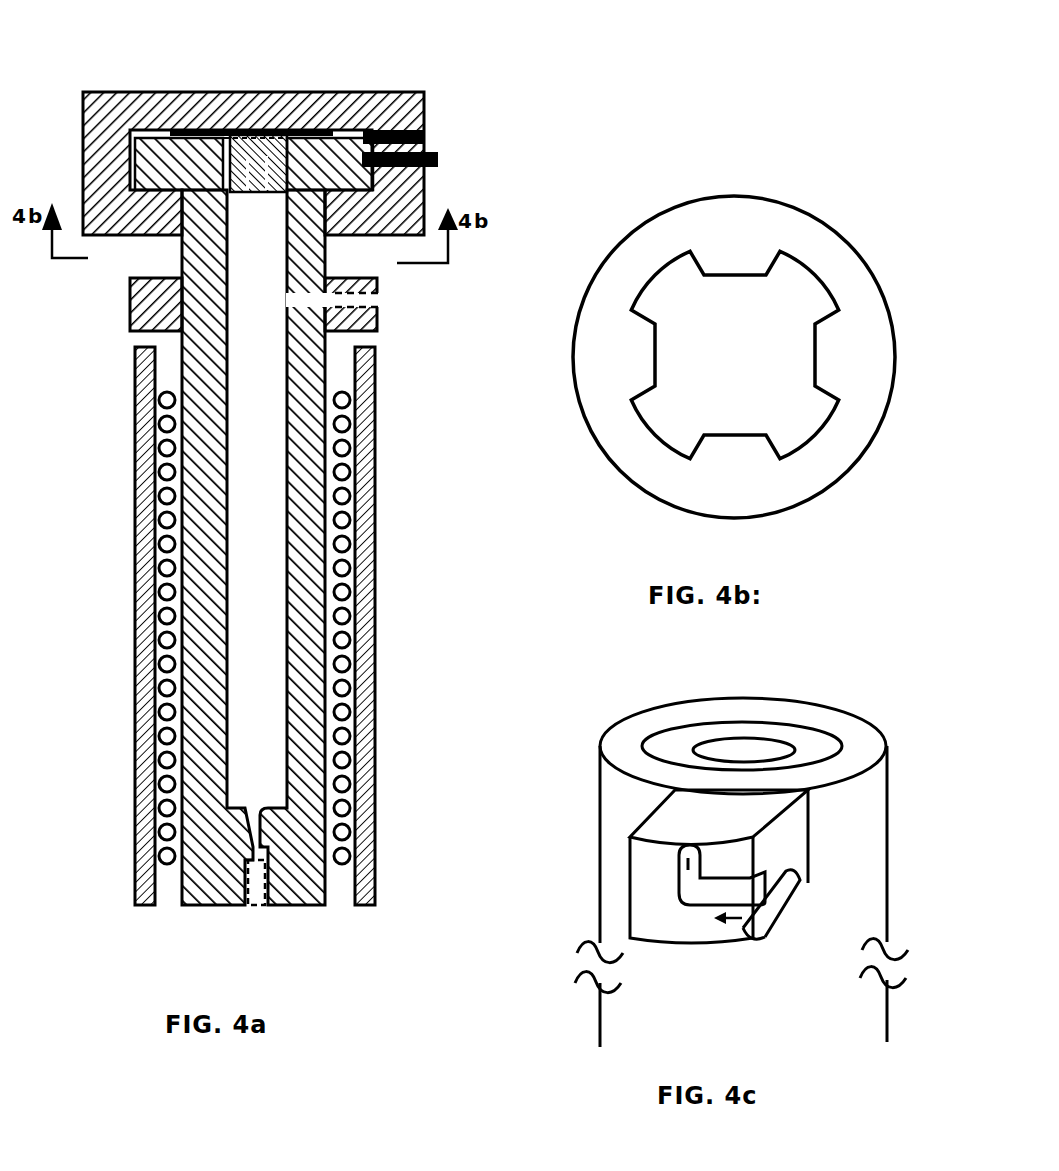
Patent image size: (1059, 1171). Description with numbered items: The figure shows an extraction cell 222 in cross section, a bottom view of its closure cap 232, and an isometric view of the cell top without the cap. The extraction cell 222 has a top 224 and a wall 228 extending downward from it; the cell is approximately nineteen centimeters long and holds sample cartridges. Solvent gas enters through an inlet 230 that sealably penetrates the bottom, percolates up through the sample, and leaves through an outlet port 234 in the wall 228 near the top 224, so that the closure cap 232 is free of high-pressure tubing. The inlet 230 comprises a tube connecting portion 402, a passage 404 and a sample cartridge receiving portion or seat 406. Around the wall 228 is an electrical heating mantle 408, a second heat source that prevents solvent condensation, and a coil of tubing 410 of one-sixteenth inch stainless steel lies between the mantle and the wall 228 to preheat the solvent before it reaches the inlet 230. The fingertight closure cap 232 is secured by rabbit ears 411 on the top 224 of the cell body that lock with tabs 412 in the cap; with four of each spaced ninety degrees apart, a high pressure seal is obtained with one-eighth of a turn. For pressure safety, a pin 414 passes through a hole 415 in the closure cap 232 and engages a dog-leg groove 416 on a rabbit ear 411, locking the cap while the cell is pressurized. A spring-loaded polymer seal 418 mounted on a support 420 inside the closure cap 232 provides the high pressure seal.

In FIG. 4a, the extraction cell 222 is at (255, 626).
In FIG. 4a, the top 224 is at (132, 263).
In FIG. 4a, the wall 228 is at (330, 625).
In FIG. 4a, the inlet 230 is at (188, 924).
In FIG. 4a, the closure cap 232 is at (88, 72).
In FIG. 4b, the closure cap 232 is at (735, 160).
In FIG. 4a, the outlet port 234 is at (386, 303).
In FIG. 4a, the tube connecting portion 402 is at (347, 919).
In FIG. 4a, the passage 404 is at (258, 828).
In FIG. 4a, the sample cartridge receiving portion or seat 406 is at (366, 775).
In FIG. 4a, the electrical heating mantle 408 is at (372, 548).
In FIG. 4a, the coil of tubing 410 is at (345, 421).
In FIG. 4a, the rabbit ears 411 is at (377, 137).
In FIG. 4c, the rabbit ears 411 is at (661, 805).
In FIG. 4a, the tabs 412 is at (380, 203).
In FIG. 4b, the tabs 412 is at (734, 437).
In FIG. 4a, the pin 414 is at (438, 159).
In FIG. 4c, the pin 414 is at (764, 938).
In FIG. 4a, the hole 415 is at (430, 172).
In FIG. 4a, the dog-leg groove 416 is at (392, 110).
In FIG. 4c, the dog-leg groove 416 is at (695, 903).
In FIG. 4a, the spring-loaded polymer seal 418 is at (357, 91).
In FIG. 4a, the support 420 is at (255, 137).